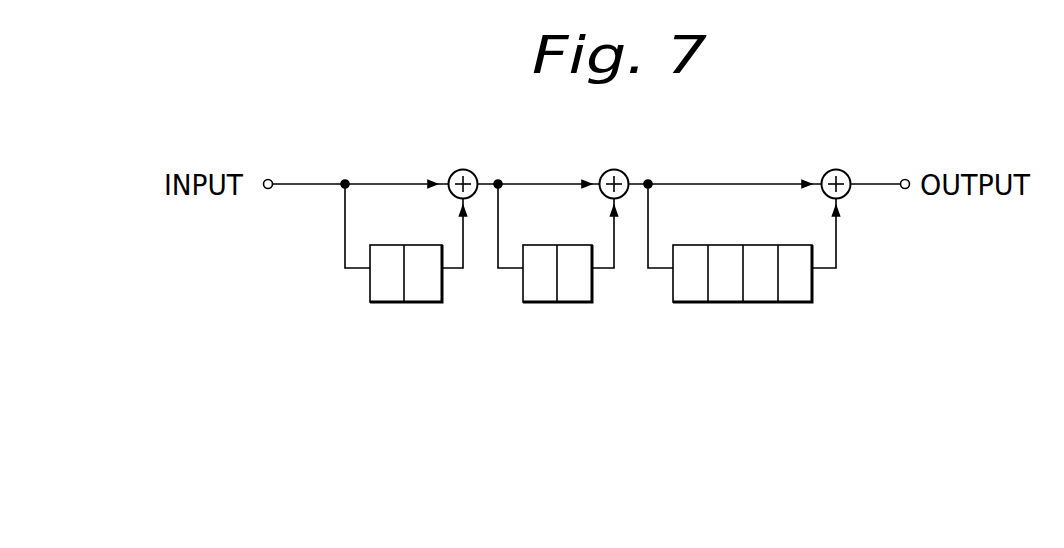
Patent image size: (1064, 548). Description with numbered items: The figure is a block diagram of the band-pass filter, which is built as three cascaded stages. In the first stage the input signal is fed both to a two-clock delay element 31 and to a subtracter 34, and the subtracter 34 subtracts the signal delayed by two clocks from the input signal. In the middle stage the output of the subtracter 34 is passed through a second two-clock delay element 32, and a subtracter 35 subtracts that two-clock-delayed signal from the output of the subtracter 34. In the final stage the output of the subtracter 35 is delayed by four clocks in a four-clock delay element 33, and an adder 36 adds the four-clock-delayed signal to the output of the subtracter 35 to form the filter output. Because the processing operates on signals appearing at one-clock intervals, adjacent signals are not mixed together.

The 2 clock delay element 31 is at (422, 302).
The 2 clock delay element 32 is at (572, 302).
The 4 clock delay element 33 is at (790, 302).
The subtracter 34 is at (466, 170).
The subtracter 35 is at (617, 170).
The adder 36 is at (838, 170).